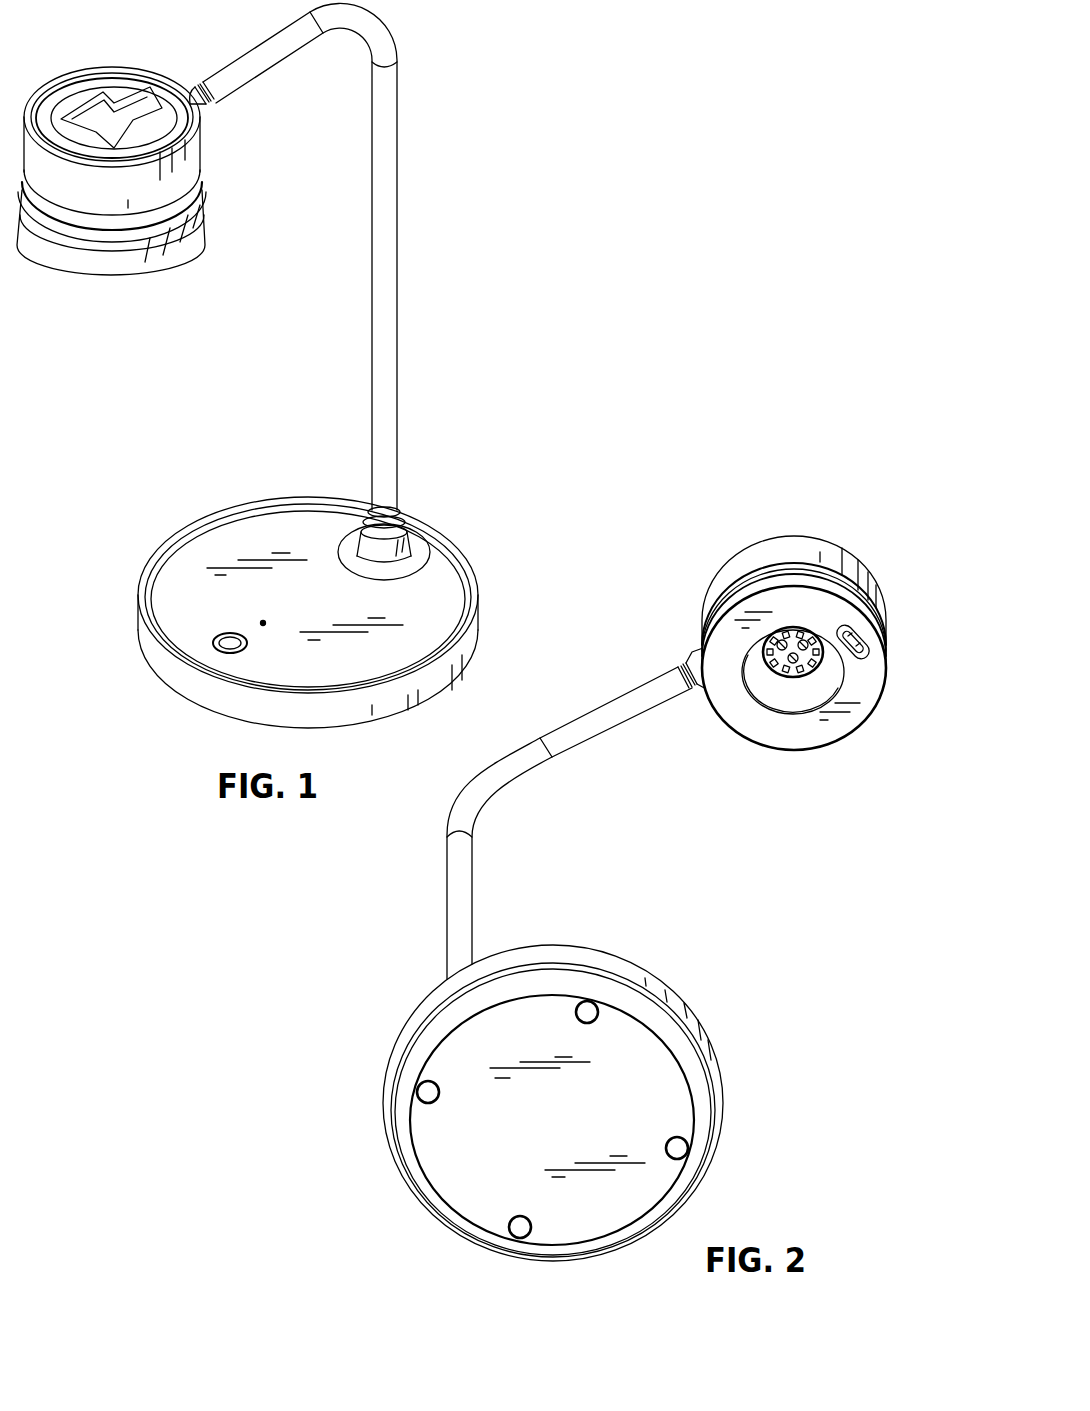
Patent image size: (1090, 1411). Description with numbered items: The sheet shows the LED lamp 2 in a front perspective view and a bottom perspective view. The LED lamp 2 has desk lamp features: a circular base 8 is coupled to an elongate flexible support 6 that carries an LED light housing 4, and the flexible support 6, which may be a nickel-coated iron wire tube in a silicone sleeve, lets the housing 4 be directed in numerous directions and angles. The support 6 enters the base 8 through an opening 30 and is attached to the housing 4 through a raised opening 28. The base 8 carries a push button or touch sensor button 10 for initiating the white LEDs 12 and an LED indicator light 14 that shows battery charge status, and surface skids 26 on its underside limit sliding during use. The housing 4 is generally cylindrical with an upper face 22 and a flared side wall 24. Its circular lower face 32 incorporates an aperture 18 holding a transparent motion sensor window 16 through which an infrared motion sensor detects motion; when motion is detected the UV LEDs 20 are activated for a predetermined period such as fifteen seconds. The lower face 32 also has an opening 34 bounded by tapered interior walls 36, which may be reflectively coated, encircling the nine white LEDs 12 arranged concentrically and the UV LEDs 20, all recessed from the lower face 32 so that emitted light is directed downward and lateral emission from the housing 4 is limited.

In FIG. 1, the LED lamp 2 is at (430, 198).
In FIG. 1, the LED light housing 4 is at (193, 150).
In FIG. 2, the LED light housing 4 is at (809, 673).
In FIG. 1, the flexible support 6 is at (392, 445).
In FIG. 2, the flexible support 6 is at (612, 708).
In FIG. 1, the base 8 is at (445, 588).
In FIG. 2, the base 8 is at (700, 1033).
In FIG. 1, the button 10 is at (213, 643).
In FIG. 2, the white LEDs 12 is at (785, 677).
In FIG. 1, the LED indicator light 14 is at (261, 622).
In FIG. 2, the motion sensor window 16 is at (868, 640).
In FIG. 2, the aperture 18 is at (862, 655).
In FIG. 2, the UV LEDs 20 is at (798, 666).
In FIG. 1, the upper face 22 is at (98, 92).
In FIG. 1, the flared side wall 24 is at (203, 212).
In FIG. 2, the surface skids 26 is at (588, 1005).
In FIG. 1, the raised opening 28 is at (177, 80).
In FIG. 2, the raised opening 28 is at (700, 648).
In FIG. 1, the opening 30 is at (405, 524).
In FIG. 2, the lower face 32 is at (858, 712).
In FIG. 2, the opening 34 is at (766, 663).
In FIG. 2, the tapered interior walls 36 is at (827, 680).